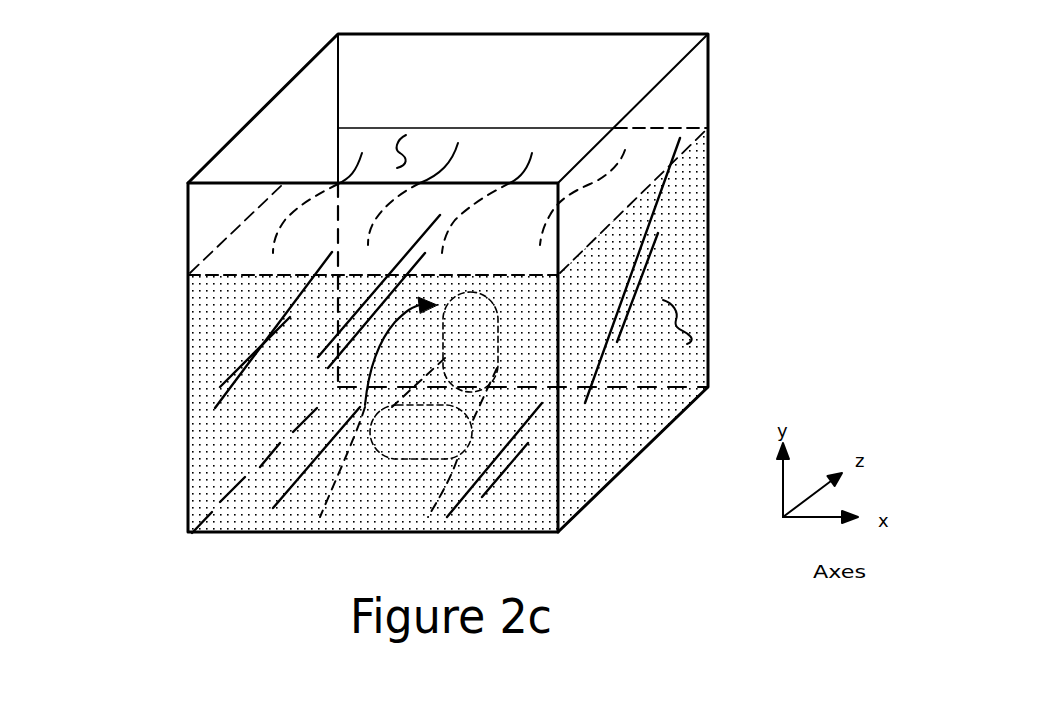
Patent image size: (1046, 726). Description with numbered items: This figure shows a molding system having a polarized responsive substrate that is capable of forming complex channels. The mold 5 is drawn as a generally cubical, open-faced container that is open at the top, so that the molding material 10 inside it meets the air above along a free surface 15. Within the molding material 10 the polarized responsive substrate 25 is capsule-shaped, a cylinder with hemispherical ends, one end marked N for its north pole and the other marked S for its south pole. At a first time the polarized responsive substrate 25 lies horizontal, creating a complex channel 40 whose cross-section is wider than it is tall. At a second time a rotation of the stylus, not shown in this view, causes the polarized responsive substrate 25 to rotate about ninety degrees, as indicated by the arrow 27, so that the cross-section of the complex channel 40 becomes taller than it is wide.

The mold 5 is at (382, 283).
The molding material 10 is at (521, 330).
The free surface 15 is at (386, 158).
The polarized responsive substrate 25 is at (287, 393).
The arrow 27 is at (240, 337).
The complex channel 40 is at (270, 437).